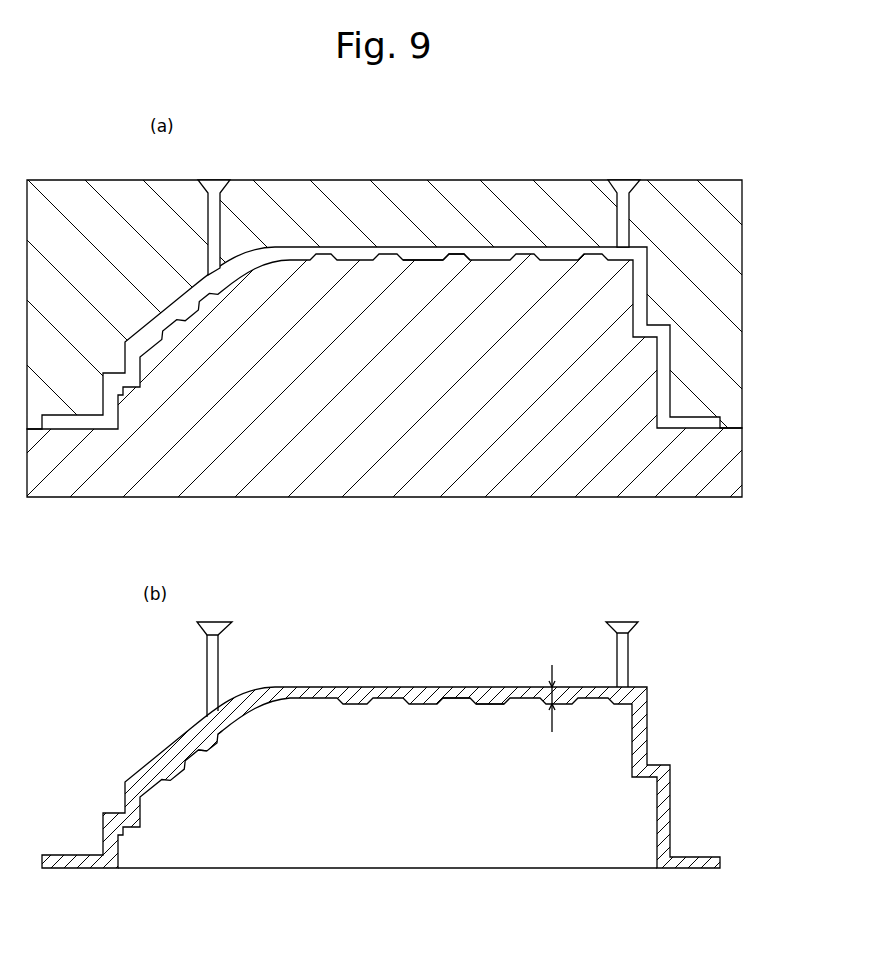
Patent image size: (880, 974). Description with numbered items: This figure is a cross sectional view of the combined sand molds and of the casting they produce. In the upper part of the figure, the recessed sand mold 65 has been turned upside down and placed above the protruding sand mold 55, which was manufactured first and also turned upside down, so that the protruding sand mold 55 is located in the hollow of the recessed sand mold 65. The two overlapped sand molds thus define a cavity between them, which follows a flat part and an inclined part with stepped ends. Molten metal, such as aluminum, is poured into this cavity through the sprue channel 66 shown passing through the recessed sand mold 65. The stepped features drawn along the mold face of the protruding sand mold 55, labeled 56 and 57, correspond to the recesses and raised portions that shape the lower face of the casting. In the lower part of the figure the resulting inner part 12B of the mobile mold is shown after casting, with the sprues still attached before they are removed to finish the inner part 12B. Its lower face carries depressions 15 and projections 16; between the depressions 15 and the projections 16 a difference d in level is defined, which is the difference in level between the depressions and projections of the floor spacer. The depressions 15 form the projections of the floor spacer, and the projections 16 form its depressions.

The sprue channel 66 is at (216, 215).
The recessed sand mold 65 is at (282, 193).
The recess of lower die 56 is at (417, 258).
The projection of lower die 57 is at (457, 255).
The protruding sand mold 55 is at (592, 490).
The inner part of the mobile mold 12B is at (352, 687).
The depressions 15 is at (227, 725).
The projections 16 is at (197, 752).
The difference in level d is at (557, 700).